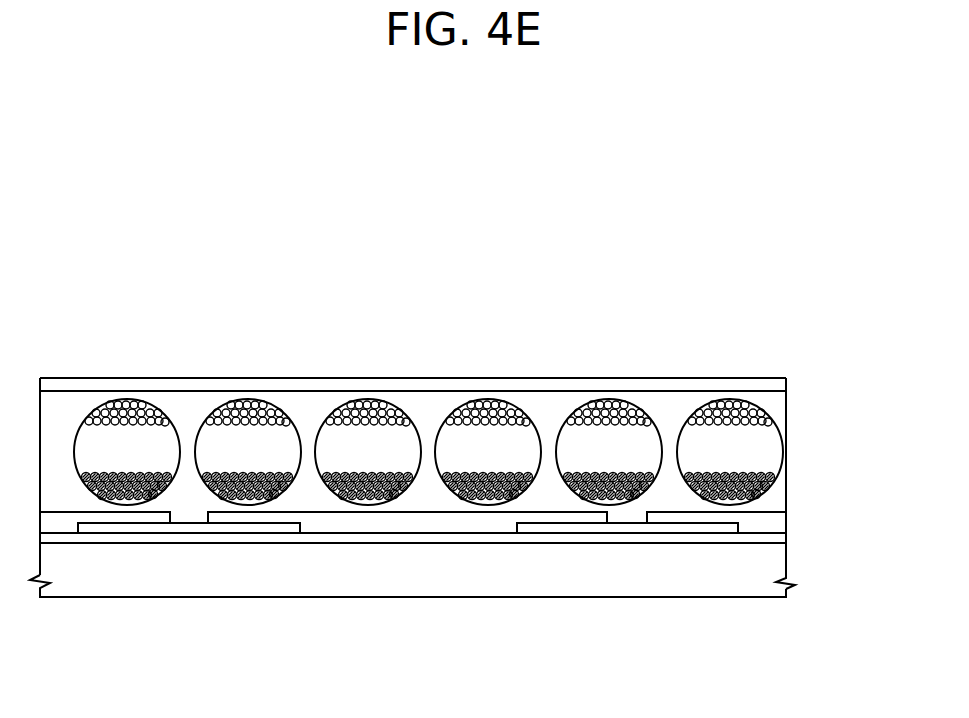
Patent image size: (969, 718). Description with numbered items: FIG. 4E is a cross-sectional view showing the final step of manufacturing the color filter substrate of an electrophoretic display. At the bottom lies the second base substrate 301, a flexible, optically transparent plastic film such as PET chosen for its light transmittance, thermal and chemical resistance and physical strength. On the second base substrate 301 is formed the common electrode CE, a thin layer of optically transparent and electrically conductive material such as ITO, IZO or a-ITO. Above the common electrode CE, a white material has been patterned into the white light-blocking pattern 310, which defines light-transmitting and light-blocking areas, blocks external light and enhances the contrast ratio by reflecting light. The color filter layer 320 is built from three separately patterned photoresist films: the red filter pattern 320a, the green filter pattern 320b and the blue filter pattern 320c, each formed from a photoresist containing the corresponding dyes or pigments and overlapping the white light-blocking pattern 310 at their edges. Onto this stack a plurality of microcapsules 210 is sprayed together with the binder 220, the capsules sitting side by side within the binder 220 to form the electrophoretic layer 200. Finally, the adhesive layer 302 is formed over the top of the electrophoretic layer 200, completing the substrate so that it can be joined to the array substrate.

The electrophoretic layer 200 is at (448, 430).
The microcapsules 210 is at (340, 400).
The binder 220 is at (424, 408).
The adhesive layer 302 is at (786, 385).
The color filter layer 320 is at (455, 576).
The red filter pattern 320a is at (65, 533).
The green filter pattern 320b is at (382, 524).
The blue filter pattern 320c is at (753, 533).
The white light-blocking pattern 310 is at (210, 528).
The common electrode CE is at (778, 541).
The second base substrate 301 is at (778, 571).